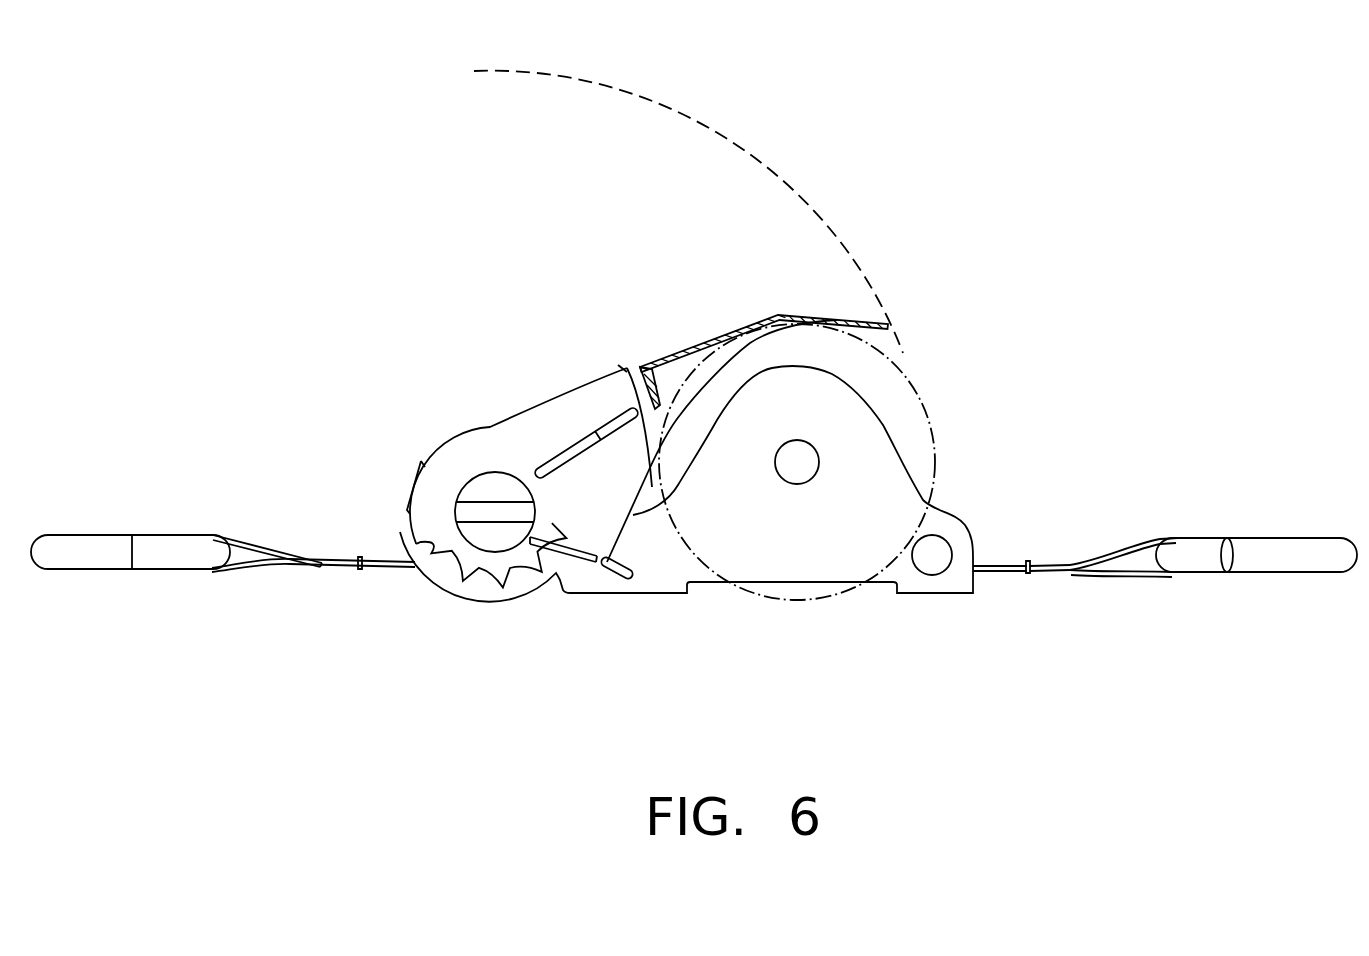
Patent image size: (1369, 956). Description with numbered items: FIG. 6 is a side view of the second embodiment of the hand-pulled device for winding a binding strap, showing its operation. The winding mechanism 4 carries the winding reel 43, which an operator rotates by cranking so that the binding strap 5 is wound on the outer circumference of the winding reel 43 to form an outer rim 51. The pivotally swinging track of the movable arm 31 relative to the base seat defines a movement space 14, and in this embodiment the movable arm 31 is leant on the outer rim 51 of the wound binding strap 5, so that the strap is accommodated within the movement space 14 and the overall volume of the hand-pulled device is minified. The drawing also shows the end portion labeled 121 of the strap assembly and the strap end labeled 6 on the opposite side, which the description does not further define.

The winding mechanism 4 is at (738, 604).
The binding strap 5 is at (287, 565).
The strap end 6 is at (1322, 550).
The movement space 14 is at (507, 163).
The movable arm 31 is at (720, 327).
The winding reel 43 is at (803, 472).
The outer rim 51 is at (927, 410).
The strap end loop 121 is at (72, 558).